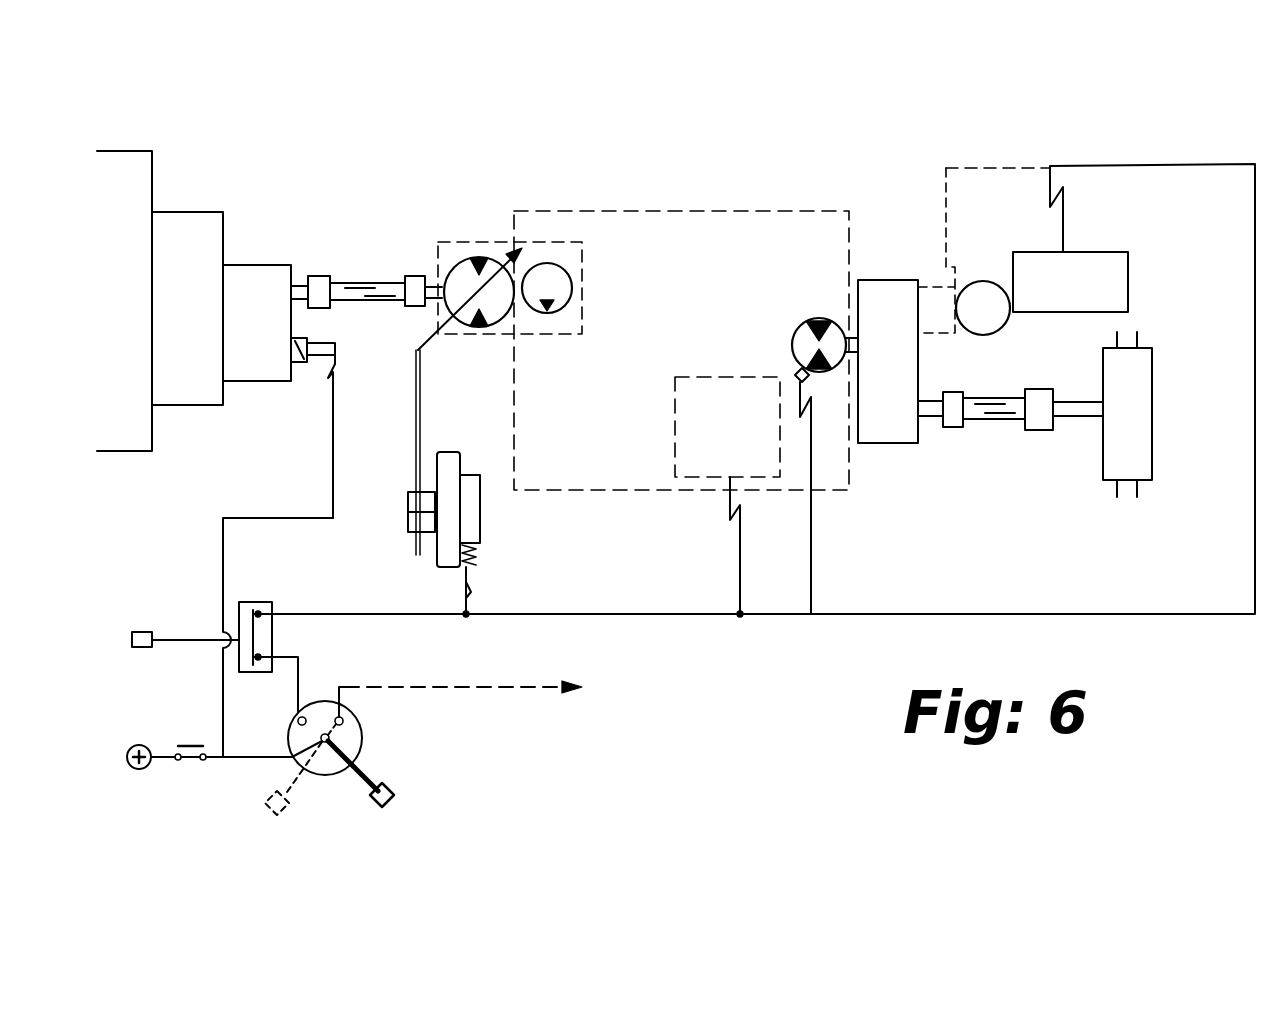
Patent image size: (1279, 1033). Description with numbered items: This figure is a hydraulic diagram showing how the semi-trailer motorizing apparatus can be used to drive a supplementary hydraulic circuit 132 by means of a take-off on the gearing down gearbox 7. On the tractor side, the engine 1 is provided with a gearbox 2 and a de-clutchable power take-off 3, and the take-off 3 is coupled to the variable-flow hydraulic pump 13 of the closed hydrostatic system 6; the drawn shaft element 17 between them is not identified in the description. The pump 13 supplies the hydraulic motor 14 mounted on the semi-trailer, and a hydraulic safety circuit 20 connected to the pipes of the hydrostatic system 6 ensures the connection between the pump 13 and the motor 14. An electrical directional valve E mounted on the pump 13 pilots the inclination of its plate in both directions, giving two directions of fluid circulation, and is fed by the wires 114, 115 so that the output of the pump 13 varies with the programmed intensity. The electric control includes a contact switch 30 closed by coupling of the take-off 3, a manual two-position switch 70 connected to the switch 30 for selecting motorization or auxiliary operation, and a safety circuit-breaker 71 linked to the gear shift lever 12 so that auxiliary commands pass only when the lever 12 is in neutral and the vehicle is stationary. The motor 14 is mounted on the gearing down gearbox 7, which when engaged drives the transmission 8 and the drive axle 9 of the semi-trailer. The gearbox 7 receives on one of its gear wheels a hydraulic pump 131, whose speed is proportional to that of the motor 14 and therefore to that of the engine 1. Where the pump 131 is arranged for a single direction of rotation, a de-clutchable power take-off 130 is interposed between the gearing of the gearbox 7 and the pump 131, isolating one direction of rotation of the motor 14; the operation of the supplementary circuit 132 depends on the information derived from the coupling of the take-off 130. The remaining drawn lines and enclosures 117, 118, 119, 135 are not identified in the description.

The engine 1 is at (127, 168).
The gearbox 2 is at (190, 228).
The de-clutchable power take-off 3 is at (258, 282).
The drive shaft 17 is at (383, 278).
The variable-flow hydraulic pump 13 is at (583, 258).
The hydrostatic system 6 is at (667, 238).
The hydraulic safety circuit 20 is at (690, 428).
The electrical directional valve E is at (480, 528).
The wire 114 is at (472, 600).
The wire 115 is at (554, 588).
The signal line 118 is at (740, 562).
The hydraulic motor 14 is at (793, 345).
The signal line 117 is at (811, 545).
The gearing down gearbox 7 is at (892, 444).
The de-clutchable power take-off 130 is at (931, 297).
The control circuit 119 is at (1010, 167).
The connecting line 135 is at (1084, 613).
The supplementary hydraulic circuit 132 is at (1093, 265).
The hydraulic pump 131 is at (980, 290).
The transmission 8 is at (1010, 425).
The drive axle 9 is at (1112, 458).
The manual gear shift lever 12 is at (175, 637).
The safety circuit-breaker 71 is at (278, 588).
The contact switch 30 is at (205, 732).
The switch 70 is at (355, 740).